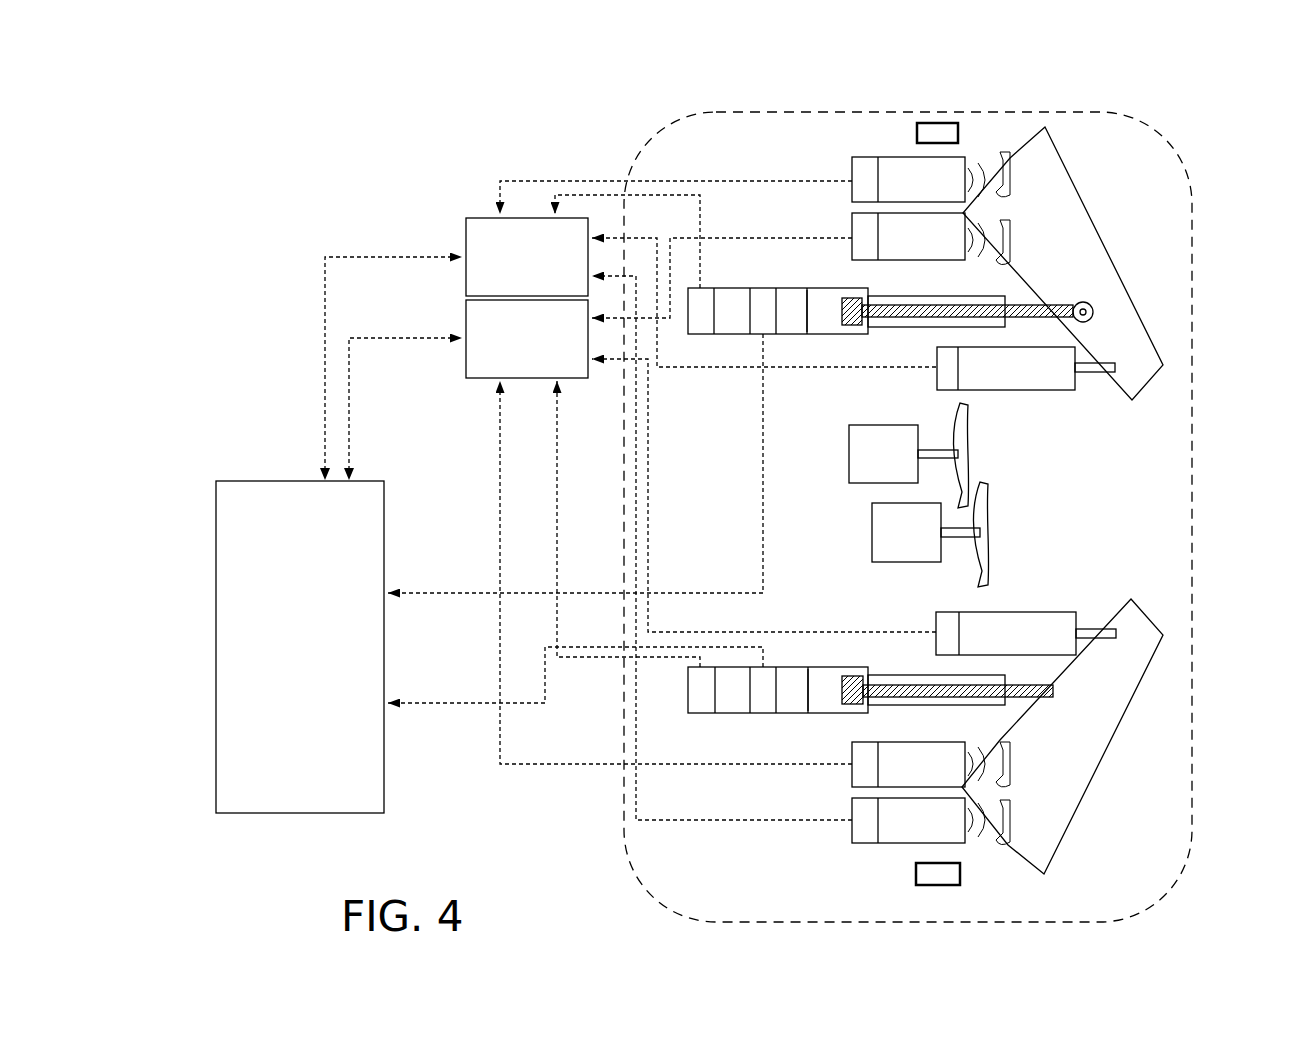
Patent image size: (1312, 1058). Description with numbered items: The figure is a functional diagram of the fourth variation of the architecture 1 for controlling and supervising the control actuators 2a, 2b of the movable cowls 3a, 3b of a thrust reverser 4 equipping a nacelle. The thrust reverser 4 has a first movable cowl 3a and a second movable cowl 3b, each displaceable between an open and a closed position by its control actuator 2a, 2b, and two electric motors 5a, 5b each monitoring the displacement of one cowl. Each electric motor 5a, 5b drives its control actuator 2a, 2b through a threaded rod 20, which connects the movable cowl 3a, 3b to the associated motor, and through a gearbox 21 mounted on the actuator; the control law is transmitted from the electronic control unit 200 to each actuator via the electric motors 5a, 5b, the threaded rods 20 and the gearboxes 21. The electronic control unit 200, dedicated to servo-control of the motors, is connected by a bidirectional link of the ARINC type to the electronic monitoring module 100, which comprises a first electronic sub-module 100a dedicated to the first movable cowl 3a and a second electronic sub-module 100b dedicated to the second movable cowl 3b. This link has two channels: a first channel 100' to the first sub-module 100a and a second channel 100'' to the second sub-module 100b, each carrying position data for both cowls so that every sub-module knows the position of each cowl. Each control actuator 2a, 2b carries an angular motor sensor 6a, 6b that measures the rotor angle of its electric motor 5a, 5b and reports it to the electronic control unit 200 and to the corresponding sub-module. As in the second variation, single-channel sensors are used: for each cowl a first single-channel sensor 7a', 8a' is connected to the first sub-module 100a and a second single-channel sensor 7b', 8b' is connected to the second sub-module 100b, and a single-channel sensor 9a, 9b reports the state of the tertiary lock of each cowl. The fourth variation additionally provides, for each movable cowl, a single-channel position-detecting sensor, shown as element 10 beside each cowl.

The architecture 1 is at (233, 152).
The control actuator 2a is at (774, 362).
The control actuator 2b is at (774, 662).
The first movable cowl 3a is at (1084, 173).
The second movable cowl 3b is at (1103, 822).
The thrust reverser 4 is at (1200, 140).
The electric motor 5a is at (828, 342).
The electric motor 5b is at (830, 663).
The motor sensor 6a is at (797, 334).
The motor sensor 6b is at (795, 667).
The single-channel sensor 7a' is at (908, 134).
The single-channel sensor 7b' is at (885, 163).
The single-channel sensor 8a' is at (908, 859).
The single-channel sensor 8b' is at (892, 820).
The single-channel sensor of the state of a tertiary lock 9a is at (703, 334).
The single-channel sensor of the state of a tertiary lock 9b is at (700, 713).
The displacement sensor 10 is at (940, 123).
The threaded rod 20 is at (905, 318).
The gearbox 21 is at (853, 322).
The electronic monitoring module 100 is at (468, 302).
The first electronic sub-module 100a is at (480, 216).
The second electronic sub-module 100b is at (478, 380).
The first channel 100' is at (375, 368).
The second channel 100'' is at (403, 409).
The electronic control unit 200 is at (212, 530).